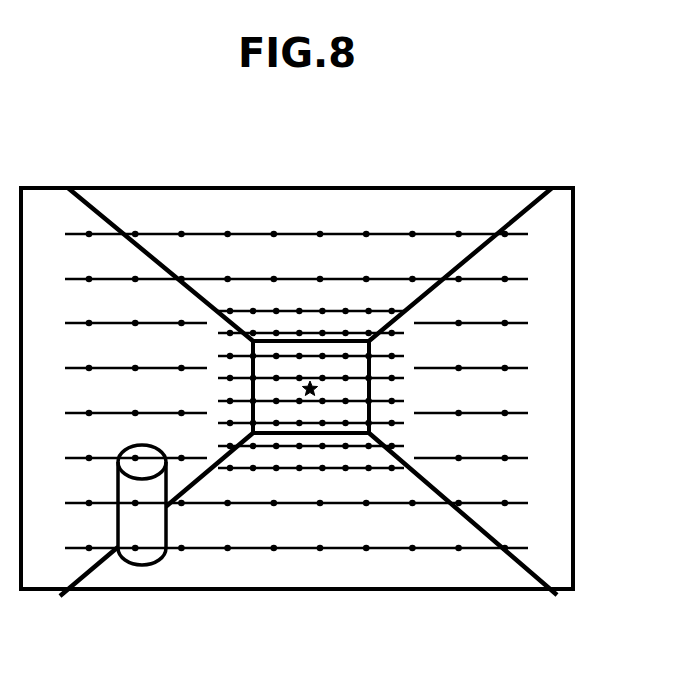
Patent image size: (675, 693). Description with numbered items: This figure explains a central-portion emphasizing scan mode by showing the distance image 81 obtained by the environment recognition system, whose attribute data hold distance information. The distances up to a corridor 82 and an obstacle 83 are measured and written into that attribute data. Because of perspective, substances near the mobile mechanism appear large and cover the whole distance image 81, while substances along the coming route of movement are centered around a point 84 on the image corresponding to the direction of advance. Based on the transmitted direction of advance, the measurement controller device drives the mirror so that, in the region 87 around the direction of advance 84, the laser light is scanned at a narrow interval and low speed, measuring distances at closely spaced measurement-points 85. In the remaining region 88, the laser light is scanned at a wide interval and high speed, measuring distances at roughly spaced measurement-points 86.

The distance image 81 is at (497, 188).
The corridor 82 is at (335, 572).
The obstacle 83 is at (160, 563).
The point 84 is at (311, 384).
The measurement-points 85 is at (276, 311).
The measurement-points 86 is at (181, 233).
The region 87 is at (310, 328).
The region 88 is at (472, 416).